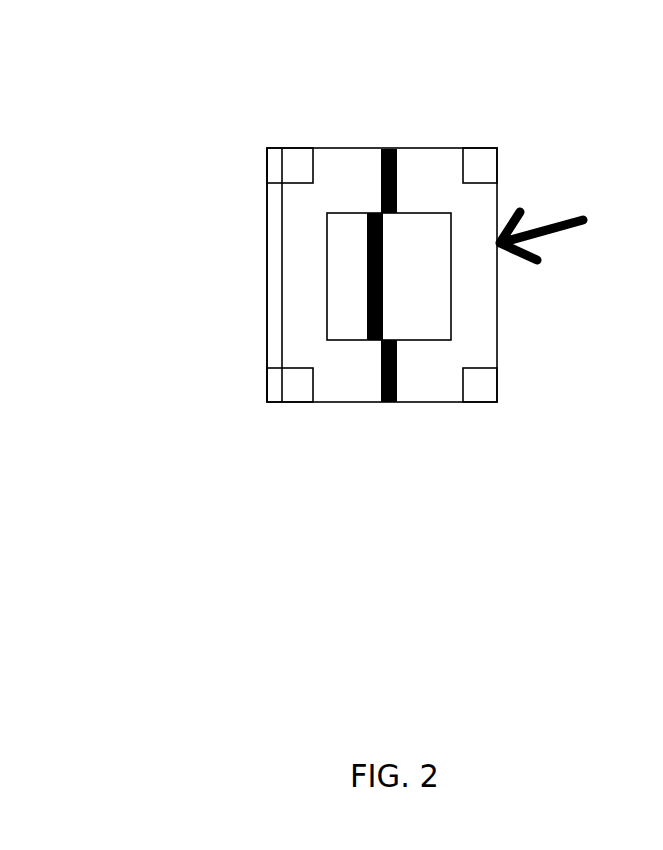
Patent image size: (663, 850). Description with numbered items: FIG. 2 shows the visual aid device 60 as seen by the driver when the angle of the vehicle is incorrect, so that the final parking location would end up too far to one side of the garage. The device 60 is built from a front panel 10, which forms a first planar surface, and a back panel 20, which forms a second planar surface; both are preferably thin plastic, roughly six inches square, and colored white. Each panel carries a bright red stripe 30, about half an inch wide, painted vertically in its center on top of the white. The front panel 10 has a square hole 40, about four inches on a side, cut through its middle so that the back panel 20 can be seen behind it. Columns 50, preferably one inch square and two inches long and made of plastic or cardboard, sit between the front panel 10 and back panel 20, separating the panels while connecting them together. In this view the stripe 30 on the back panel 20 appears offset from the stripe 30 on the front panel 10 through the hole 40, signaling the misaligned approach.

The front panel 10 is at (347, 167).
The back panel 20 is at (265, 230).
The red stripe 30 is at (395, 167).
The square hole 40 is at (449, 313).
The columns 50 is at (278, 173).
The visual aid device 60 is at (563, 230).